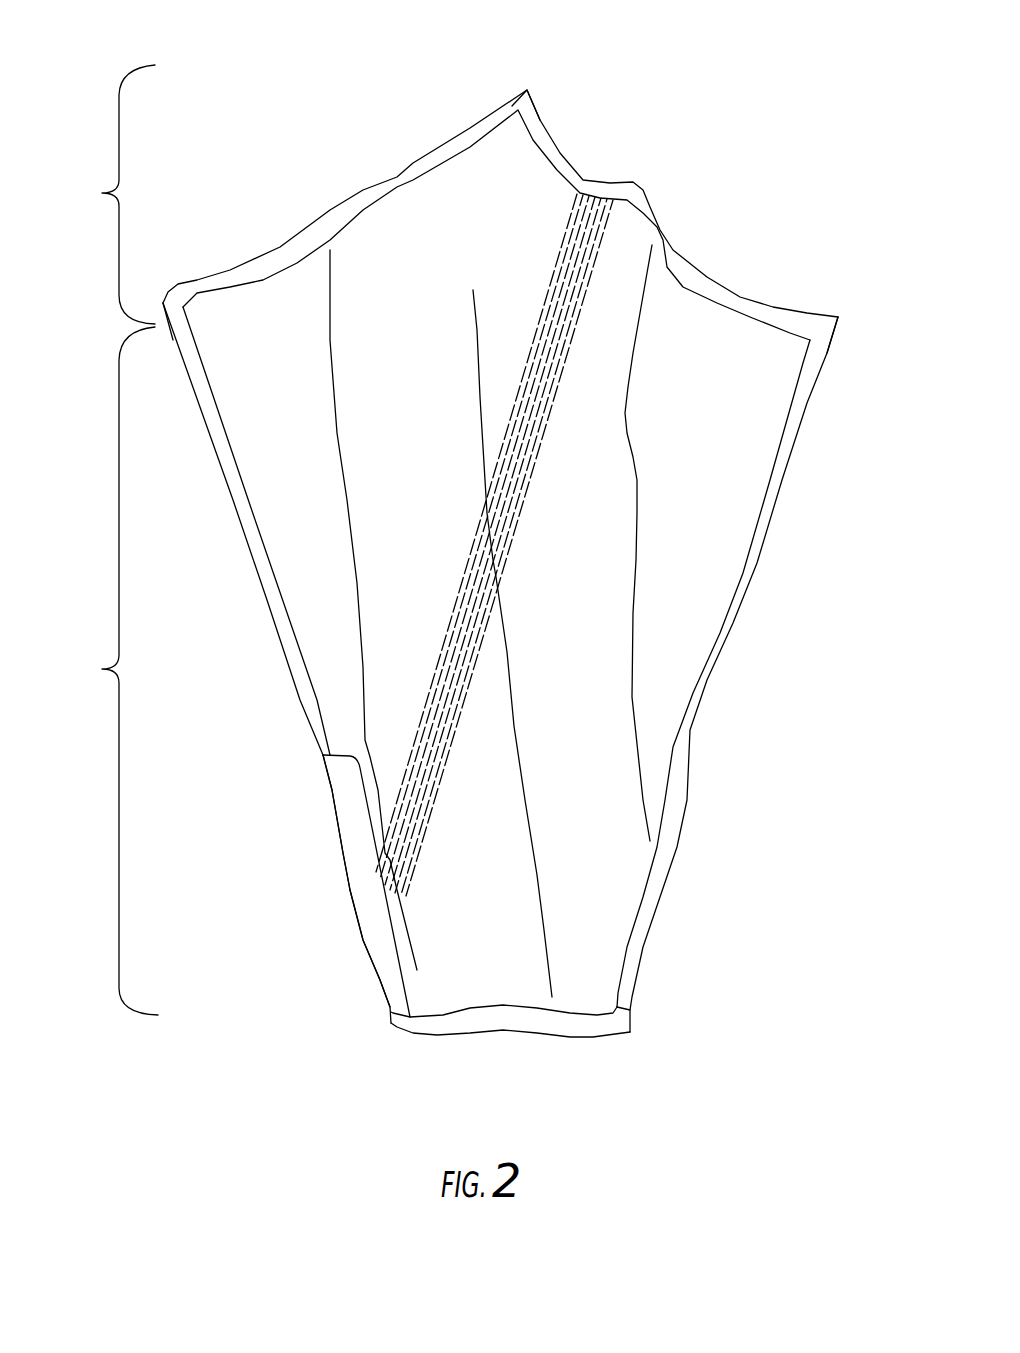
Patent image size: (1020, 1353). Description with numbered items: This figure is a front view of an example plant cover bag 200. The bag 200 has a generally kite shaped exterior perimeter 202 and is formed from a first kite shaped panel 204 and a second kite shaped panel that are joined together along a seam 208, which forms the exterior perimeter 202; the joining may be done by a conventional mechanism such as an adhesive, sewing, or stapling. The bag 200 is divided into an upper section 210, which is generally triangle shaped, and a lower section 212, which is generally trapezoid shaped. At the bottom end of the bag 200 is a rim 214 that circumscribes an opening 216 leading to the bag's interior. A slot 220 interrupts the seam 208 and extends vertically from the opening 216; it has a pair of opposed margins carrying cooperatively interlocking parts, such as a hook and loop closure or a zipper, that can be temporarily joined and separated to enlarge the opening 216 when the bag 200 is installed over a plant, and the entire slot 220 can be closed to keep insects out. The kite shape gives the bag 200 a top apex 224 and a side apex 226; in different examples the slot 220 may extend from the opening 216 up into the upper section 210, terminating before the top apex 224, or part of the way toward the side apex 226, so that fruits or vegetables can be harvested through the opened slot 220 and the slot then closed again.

The bag 200 is at (503, 580).
The exterior perimeter 202 is at (806, 399).
The first kite shaped panel 204 is at (580, 552).
The seam 208 is at (345, 217).
The upper section 210 is at (102, 193).
The lower section 212 is at (102, 669).
The rim 214 is at (590, 1018).
The opening 216 is at (568, 1048).
The slot 220 is at (345, 880).
The top apex 224 is at (527, 90).
The side apex 226 is at (170, 305).